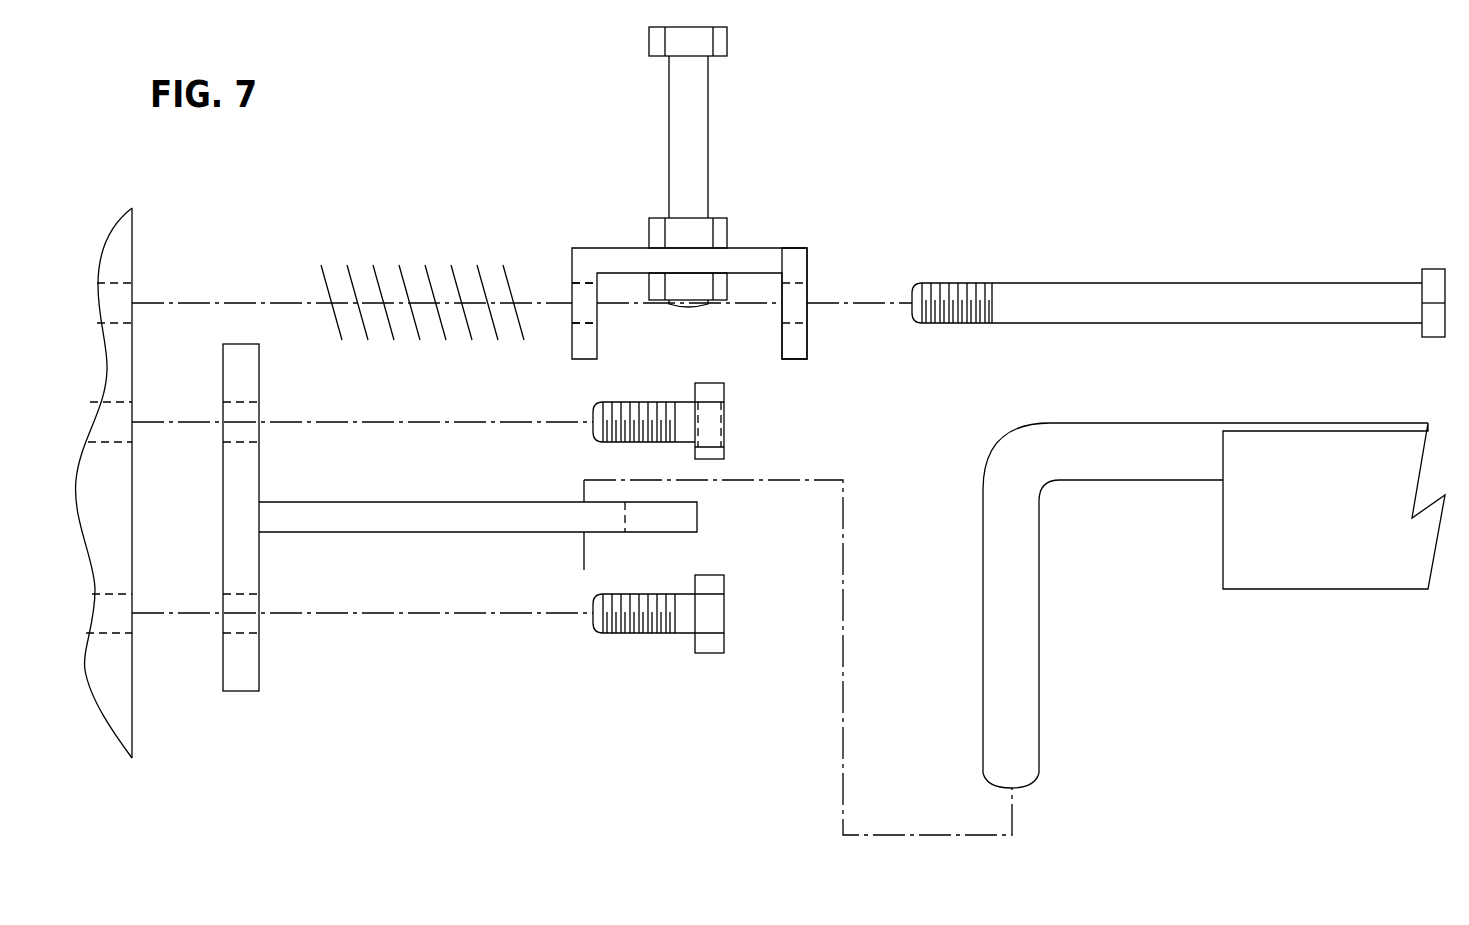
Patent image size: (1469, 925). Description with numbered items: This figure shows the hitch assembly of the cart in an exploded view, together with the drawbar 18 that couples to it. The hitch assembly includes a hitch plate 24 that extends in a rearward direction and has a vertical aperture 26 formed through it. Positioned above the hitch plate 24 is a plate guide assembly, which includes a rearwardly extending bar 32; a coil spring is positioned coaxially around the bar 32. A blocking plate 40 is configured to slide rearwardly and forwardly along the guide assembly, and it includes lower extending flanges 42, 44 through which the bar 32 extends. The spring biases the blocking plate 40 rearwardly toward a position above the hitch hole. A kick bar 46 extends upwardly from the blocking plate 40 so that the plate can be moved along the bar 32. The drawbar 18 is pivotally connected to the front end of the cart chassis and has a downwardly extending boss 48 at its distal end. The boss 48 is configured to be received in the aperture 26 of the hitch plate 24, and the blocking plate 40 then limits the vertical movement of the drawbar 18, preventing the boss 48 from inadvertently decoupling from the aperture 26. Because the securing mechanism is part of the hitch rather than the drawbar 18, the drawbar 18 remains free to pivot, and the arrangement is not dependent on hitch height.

The drawbar 18 is at (1345, 528).
The hitch plate 24 is at (381, 502).
The vertical aperture 26 is at (540, 500).
The bar 32 is at (1298, 292).
The blocking plate 40 is at (611, 247).
The lower extending flange 42 is at (806, 248).
The lower extending flange 44 is at (597, 332).
The kick bar 46 is at (709, 97).
The downwardly extending boss 48 is at (1022, 717).